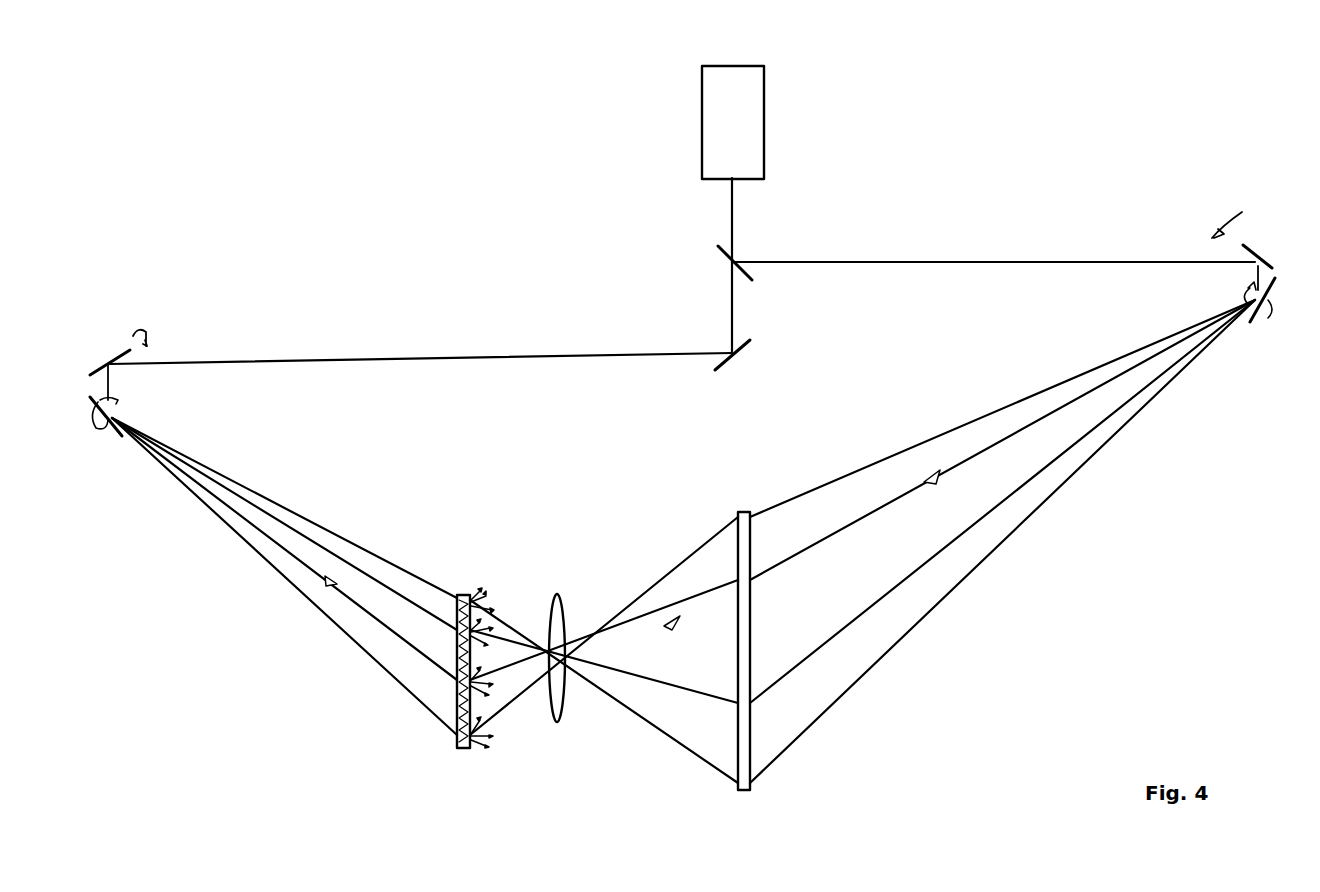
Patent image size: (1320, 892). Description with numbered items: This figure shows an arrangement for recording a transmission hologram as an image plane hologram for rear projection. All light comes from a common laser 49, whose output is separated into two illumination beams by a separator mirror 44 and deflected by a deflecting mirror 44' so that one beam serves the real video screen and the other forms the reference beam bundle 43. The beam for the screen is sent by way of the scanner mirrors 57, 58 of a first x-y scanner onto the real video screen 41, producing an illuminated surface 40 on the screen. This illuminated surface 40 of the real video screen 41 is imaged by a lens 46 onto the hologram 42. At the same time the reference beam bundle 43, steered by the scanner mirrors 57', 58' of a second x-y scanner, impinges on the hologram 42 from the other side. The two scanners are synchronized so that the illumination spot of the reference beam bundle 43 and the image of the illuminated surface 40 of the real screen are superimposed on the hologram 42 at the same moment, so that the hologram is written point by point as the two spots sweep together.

The common laser 49 is at (770, 86).
The separator mirror 44 is at (713, 249).
The deflecting mirror 44' is at (754, 355).
The scanner mirror 57 is at (105, 357).
The scanner mirror 58 is at (251, 566).
The scanner mirror 57' is at (1263, 251).
The scanner mirror 58' is at (1279, 300).
The real video screen 41 is at (454, 580).
The illuminated surface 40 is at (483, 593).
The lens 46 is at (554, 708).
The hologram 42 is at (748, 512).
The reference beam bundle 43 is at (988, 428).